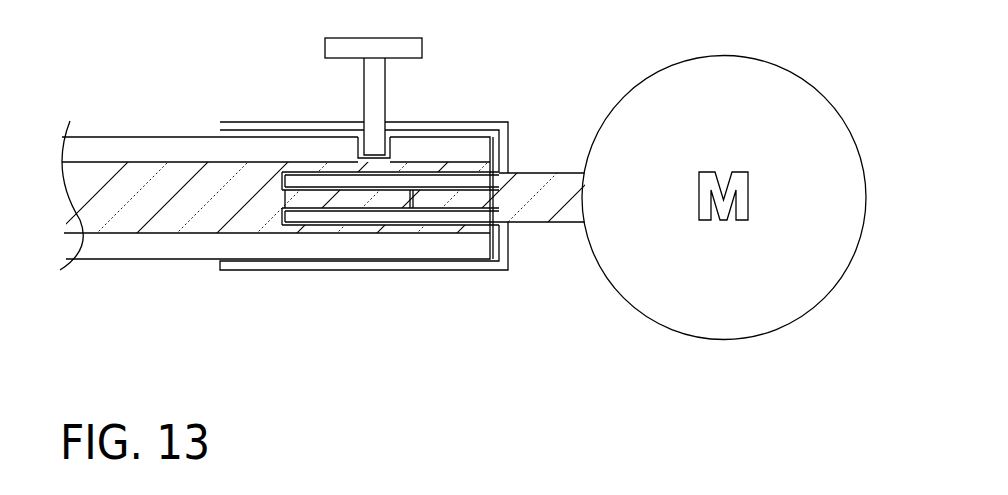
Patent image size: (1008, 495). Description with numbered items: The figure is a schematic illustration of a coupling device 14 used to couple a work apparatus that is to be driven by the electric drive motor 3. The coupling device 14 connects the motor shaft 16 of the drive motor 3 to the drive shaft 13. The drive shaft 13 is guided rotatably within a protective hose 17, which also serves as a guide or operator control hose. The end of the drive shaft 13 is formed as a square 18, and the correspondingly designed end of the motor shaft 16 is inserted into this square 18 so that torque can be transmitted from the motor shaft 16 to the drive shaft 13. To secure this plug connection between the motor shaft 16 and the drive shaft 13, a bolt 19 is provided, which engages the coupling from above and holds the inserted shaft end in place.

The drive motor 3 is at (742, 340).
The drive shaft 13 is at (118, 228).
The coupling device 14 is at (433, 337).
The motor shaft 16 is at (538, 223).
The protective hose 17 is at (107, 150).
The square 18 is at (335, 198).
The bolt 19 is at (386, 98).